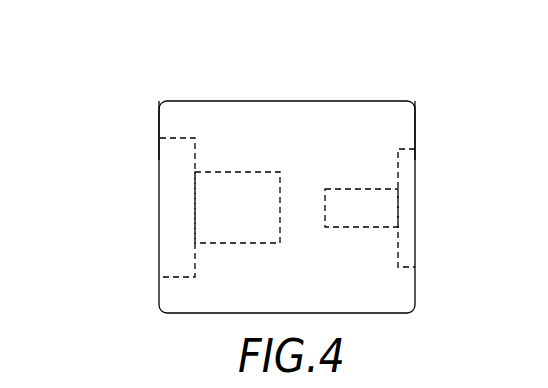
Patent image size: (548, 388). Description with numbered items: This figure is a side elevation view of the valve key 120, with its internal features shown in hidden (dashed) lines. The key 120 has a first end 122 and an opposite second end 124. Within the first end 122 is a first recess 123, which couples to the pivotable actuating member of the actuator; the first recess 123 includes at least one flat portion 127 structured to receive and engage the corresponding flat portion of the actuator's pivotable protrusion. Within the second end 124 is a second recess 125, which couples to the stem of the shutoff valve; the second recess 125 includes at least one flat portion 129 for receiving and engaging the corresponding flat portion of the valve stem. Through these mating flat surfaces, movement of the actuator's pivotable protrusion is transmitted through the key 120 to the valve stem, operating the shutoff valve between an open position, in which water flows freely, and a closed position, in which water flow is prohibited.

The key 120 is at (225, 107).
The first end 122 is at (147, 97).
The first recess 123 is at (155, 213).
The second end 124 is at (426, 104).
The second recess 125 is at (432, 202).
The flat portion 127 is at (230, 176).
The flat portion 129 is at (352, 189).